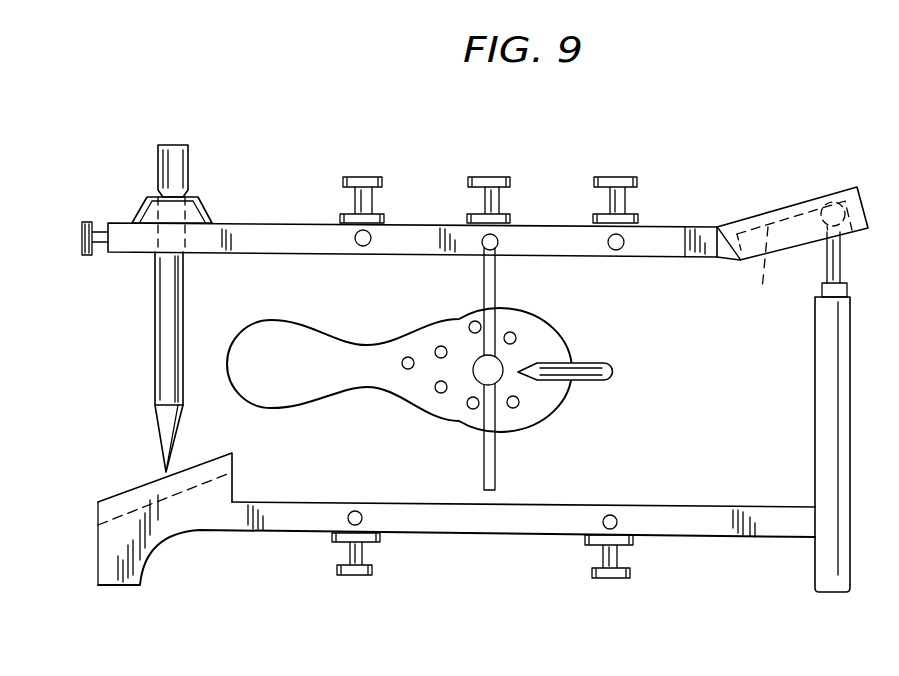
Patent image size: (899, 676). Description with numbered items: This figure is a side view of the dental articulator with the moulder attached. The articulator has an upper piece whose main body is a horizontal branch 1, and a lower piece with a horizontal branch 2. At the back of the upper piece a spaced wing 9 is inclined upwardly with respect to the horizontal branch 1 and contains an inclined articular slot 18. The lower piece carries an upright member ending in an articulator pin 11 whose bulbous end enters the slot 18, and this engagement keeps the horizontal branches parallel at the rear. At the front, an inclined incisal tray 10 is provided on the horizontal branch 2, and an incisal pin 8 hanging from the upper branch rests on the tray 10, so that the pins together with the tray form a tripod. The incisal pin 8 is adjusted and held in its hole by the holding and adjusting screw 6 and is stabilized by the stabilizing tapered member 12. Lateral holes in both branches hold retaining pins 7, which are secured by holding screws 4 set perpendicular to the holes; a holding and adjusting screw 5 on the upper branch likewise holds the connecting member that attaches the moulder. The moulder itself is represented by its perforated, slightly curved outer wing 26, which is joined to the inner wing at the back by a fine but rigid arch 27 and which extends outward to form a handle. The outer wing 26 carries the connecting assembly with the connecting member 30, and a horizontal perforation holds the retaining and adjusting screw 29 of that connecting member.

The horizontal branch 1 is at (277, 230).
The horizontal branch 2 is at (258, 500).
The holding screw 4 is at (378, 176).
The holding and adjusting screw 5 is at (504, 176).
The holding and adjusting screw 6 is at (82, 243).
The retaining pin 7 is at (362, 247).
The incisal pin 8 is at (155, 365).
The wing 9 is at (813, 199).
The incisal tray 10 is at (113, 497).
The articulator pin 11 is at (835, 262).
The stabilizing tapered member 12 is at (142, 211).
The slot 18 is at (794, 259).
The outer wing 26 is at (316, 393).
The arch 27 is at (612, 378).
The retaining and adjusting screw 29 is at (500, 377).
The connecting member 30 is at (494, 287).